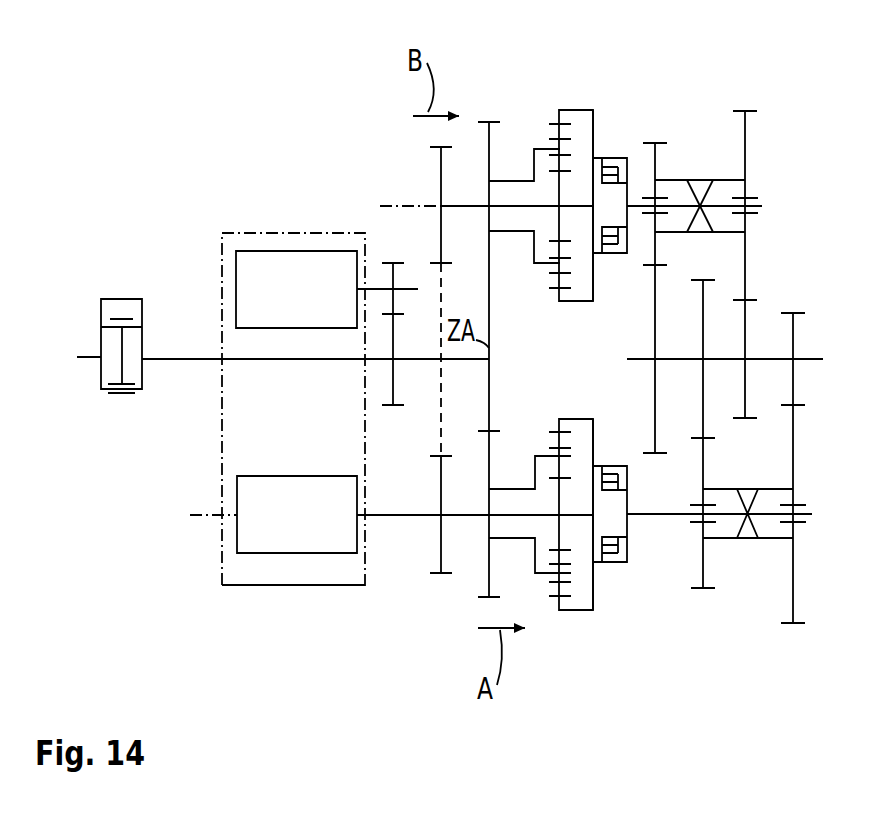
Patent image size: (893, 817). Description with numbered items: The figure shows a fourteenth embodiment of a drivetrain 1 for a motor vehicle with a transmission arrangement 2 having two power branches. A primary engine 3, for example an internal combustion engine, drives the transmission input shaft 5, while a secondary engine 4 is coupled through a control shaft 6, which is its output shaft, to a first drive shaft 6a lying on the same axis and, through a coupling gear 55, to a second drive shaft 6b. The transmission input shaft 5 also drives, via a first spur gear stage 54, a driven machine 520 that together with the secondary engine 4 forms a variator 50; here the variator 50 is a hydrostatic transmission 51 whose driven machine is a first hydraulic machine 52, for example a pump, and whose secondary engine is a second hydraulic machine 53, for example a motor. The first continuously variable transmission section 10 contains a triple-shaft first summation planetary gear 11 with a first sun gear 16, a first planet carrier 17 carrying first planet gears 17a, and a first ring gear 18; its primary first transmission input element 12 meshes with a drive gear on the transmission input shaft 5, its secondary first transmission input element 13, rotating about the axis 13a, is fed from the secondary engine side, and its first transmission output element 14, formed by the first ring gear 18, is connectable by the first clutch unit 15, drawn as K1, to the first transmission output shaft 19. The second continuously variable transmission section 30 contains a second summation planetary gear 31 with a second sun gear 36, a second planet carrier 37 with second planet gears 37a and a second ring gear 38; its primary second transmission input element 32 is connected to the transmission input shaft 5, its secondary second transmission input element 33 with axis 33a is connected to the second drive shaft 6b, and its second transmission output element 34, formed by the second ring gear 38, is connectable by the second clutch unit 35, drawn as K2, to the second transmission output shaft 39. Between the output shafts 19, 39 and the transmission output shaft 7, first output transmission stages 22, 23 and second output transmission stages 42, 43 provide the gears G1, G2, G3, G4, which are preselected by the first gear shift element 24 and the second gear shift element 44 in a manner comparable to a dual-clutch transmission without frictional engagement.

The drivetrain 1 is at (177, 411).
The transmission arrangement 2 is at (496, 84).
The primary engine 3 is at (80, 334).
The secondary engine 4 is at (256, 555).
The transmission input shaft 5 is at (180, 356).
The control shaft 6 is at (410, 518).
The first drive shaft 6a is at (478, 517).
The second drive shaft 6b is at (509, 204).
The transmission output shaft 7 is at (820, 360).
The first continuously variable transmission section 10 is at (568, 619).
The first summation planetary gear 11 is at (583, 603).
The primary first transmission input element 12 is at (489, 445).
The secondary first transmission input element 13 is at (565, 502).
The axis of rotation of the secondary first transmission input element 13a is at (190, 517).
The first transmission output element 14 is at (595, 593).
The first clutch unit 15 is at (643, 573).
The first sun gear 16 is at (600, 495).
The first planet carrier 17 is at (537, 566).
The first planet gears 17a is at (565, 442).
The first ring gear 18 is at (573, 418).
The first transmission output shaft 19 is at (645, 517).
The first output transmission stage 22 is at (709, 632).
The first output transmission stage 23 is at (806, 668).
The first gear shift element 24 is at (745, 540).
The second continuously variable transmission section 30 is at (571, 106).
The second summation planetary gear 31 is at (590, 118).
The primary second transmission input element 32 is at (489, 268).
The secondary second transmission input element 33 is at (559, 207).
The axis of rotation of the secondary second transmission input element 33a is at (383, 204).
The second transmission output element 34 is at (600, 279).
The second clutch unit 35 is at (618, 263).
The second sun gear 36 is at (561, 188).
The second planet carrier 37 is at (538, 146).
The second planet gears 37a is at (557, 281).
The second ring gear 38 is at (597, 120).
The second transmission output shaft 39 is at (656, 180).
The second output transmission stage 42 is at (681, 104).
The second output transmission stage 43 is at (754, 158).
The second gear shift element 44 is at (700, 233).
The variator 50 is at (222, 224).
The hydrostatic transmission 51 is at (289, 589).
The first hydraulic machine 52 is at (296, 289).
The second hydraulic machine 53 is at (297, 514).
The first spur gear stage 54 is at (386, 242).
The coupling gear 55 is at (440, 406).
The driven machine 520 is at (239, 272).
The first clutch K1 is at (605, 566).
The second clutch K2 is at (603, 156).
The gear G1 is at (652, 283).
The gear G2 is at (703, 451).
The gear G3 is at (745, 249).
The gear G4 is at (793, 486).